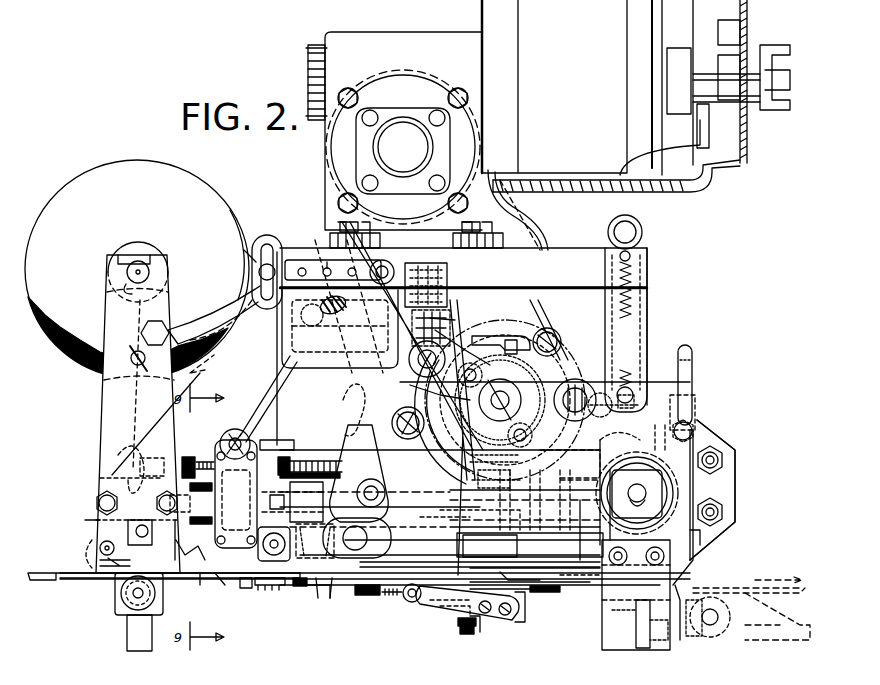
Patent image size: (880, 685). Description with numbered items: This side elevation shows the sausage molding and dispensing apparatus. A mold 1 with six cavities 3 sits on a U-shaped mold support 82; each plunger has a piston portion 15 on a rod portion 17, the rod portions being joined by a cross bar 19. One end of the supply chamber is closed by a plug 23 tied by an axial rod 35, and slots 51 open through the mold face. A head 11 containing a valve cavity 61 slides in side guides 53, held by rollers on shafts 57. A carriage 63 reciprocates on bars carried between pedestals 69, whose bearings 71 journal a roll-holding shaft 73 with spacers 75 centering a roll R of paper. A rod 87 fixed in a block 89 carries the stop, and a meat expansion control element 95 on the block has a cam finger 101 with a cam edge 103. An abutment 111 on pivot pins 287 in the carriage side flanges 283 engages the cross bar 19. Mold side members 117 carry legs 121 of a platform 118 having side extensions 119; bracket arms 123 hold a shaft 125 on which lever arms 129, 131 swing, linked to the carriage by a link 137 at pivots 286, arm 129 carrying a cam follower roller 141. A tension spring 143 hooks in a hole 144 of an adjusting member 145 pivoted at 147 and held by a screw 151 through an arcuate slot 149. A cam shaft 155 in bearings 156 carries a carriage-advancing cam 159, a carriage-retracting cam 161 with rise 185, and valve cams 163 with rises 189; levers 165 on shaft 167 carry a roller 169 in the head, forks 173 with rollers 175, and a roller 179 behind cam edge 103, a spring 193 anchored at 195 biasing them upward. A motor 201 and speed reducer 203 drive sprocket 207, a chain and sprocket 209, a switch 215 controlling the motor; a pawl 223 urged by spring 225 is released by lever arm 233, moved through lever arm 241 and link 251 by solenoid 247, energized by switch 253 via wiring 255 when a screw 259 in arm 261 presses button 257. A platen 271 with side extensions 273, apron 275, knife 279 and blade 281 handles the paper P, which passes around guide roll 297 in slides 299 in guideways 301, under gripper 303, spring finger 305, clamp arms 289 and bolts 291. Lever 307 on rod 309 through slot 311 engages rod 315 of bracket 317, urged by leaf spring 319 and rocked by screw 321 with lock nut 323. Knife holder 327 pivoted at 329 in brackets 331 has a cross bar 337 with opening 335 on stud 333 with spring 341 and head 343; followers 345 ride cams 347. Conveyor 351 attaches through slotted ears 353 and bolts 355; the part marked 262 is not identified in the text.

The roll of packaging paper R is at (101, 175).
The strip of paper P is at (143, 444).
The mold 1 is at (458, 491).
The cavities 3 is at (585, 540).
The head 11 is at (700, 545).
The piston portion 15 is at (524, 546).
The rod portion 17 is at (400, 552).
The cross bar 19 is at (355, 538).
The plug 23 is at (636, 551).
The rod 35 is at (643, 500).
The slots 51 is at (637, 493).
The side guides 53 is at (732, 482).
The shaft 57 is at (724, 514).
The valve cavity 61 is at (700, 540).
The carriage 63 is at (298, 458).
The pedestals 69 is at (104, 392).
The bearings 71 is at (141, 291).
The roll-holding shaft 73 is at (150, 272).
The spacers 75 is at (133, 250).
The U-shaped mold support 82 is at (602, 628).
The rod 87 is at (441, 525).
The block 89 is at (476, 520).
The meat expansion control element 95 is at (614, 410).
The cam finger 101 is at (660, 396).
The cam edge 103 is at (647, 438).
The abutment 111 is at (330, 552).
The side members 117 is at (674, 376).
The platform 118 is at (586, 250).
The side extensions 119 is at (222, 324).
The legs 121 is at (645, 322).
The bracket arms 123 is at (455, 320).
The shaft 125 is at (412, 365).
The lever arm 129 is at (376, 516).
The lever arm 131 is at (342, 406).
The link 137 is at (326, 597).
The cam follower roller 141 is at (406, 430).
The tension spring 143 is at (346, 298).
The hole 144 is at (303, 262).
The spring tension adjusting member 145 is at (266, 236).
The pivot 147 is at (393, 262).
The arcuate slot 149 is at (254, 248).
The screw 151 is at (258, 272).
The cam shaft 155 is at (500, 398).
The bearings 156 is at (495, 453).
The carriage-advancing cam 159 is at (578, 362).
The carriage-retracting cam 161 is at (546, 465).
The slide valve operating cams 163 is at (408, 389).
The slide valve operating levers 165 is at (582, 378).
The transverse shaft 167 is at (526, 430).
The roller 169 is at (695, 426).
The fork 173 is at (558, 330).
The upper cam follower rollers 175 is at (552, 325).
The roller 179 is at (620, 442).
The rise 185 is at (495, 473).
The rise 189 is at (500, 363).
The tension spring 193 is at (646, 300).
The spring connection 195 is at (648, 248).
The electric motor 201 is at (556, 86).
The speed reducer 203 is at (398, 32).
The sprocket 207 is at (382, 78).
The sprocket 209 is at (518, 324).
The manual motor switch 215 is at (758, 41).
The pawl 223 is at (498, 335).
The compression spring 225 is at (444, 418).
The lever arm 233 is at (478, 340).
The lever arm 241 is at (436, 270).
The solenoid 247 is at (340, 329).
The link 251 is at (421, 306).
The momentary contact switch 253 is at (233, 432).
The flexible wiring connection 255 is at (256, 400).
The operating button 257 is at (236, 494).
The screw 259 is at (286, 501).
The arm 261 is at (322, 474).
The arm 262 is at (676, 582).
The platen 271 is at (365, 596).
The side extensions 273 is at (548, 592).
The apron 275 is at (580, 568).
The knife 279 is at (518, 622).
The horizontal blade 281 is at (535, 570).
The side flanges 283 is at (314, 596).
The pivots 286 is at (259, 597).
The pivot pins 287 is at (303, 586).
The clamp arms 289 is at (268, 584).
The bolts 291 is at (246, 544).
The guide roll 297 is at (98, 548).
The slides 299 is at (96, 564).
The guideways 301 is at (112, 578).
The paper gripper 303 is at (206, 578).
The spring finger 305 is at (327, 570).
The lever 307 is at (112, 482).
The rod 309 is at (104, 491).
The elongate slot 311 is at (102, 516).
The rod 315 is at (96, 532).
The U-shaped bracket 317 is at (179, 540).
The leaf spring 319 is at (122, 448).
The paper length control screw 321 is at (157, 456).
The lock nut 323 is at (272, 452).
The knife holder 327 is at (500, 620).
The pivot 329 is at (408, 604).
The brackets 331 is at (388, 601).
The stud 333 is at (476, 632).
The opening 335 is at (450, 618).
The cross bar 337 is at (440, 608).
The coil spring 341 is at (460, 626).
The head 343 is at (462, 634).
The cam follower members 345 is at (494, 598).
The cams 347 is at (627, 624).
The endless conveyor 351 is at (740, 585).
The slotted ears 353 is at (636, 628).
The bolts 355 is at (700, 636).